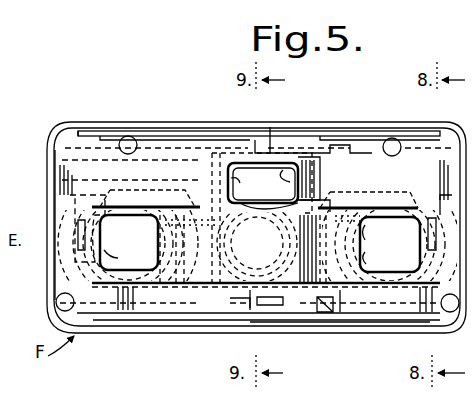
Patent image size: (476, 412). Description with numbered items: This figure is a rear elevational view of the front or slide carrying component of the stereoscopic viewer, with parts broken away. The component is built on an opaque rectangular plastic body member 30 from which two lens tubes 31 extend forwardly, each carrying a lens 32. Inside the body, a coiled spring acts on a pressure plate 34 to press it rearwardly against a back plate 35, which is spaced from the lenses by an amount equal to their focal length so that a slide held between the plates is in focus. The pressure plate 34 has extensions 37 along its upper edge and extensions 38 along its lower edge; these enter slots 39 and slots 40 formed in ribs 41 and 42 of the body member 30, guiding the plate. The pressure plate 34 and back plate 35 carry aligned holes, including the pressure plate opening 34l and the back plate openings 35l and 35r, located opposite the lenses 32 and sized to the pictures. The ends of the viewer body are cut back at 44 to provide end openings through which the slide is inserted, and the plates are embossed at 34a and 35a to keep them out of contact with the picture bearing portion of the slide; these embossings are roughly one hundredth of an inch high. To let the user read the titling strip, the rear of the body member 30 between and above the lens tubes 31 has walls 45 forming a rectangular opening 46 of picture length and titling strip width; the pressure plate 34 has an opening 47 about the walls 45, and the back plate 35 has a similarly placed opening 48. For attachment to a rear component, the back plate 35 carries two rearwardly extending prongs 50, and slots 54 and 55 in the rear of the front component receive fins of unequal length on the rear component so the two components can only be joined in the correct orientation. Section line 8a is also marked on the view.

The plastic body member 30 is at (78, 120).
The lens tube 31 is at (138, 320).
The lens 32 is at (259, 243).
The pressure plate 34 is at (255, 184).
The embossing of pressure plate 34a is at (257, 223).
The opening of pressure plate 34l is at (365, 240).
The back plate 35 is at (250, 232).
The embossing of back plate 35a is at (402, 340).
The opening of back plate 35l is at (370, 258).
The opening of back plate 35r is at (150, 256).
The upper extension of pressure plate 37 is at (180, 136).
The lower extension of pressure plate 38 is at (215, 323).
The upper slot 39 is at (150, 132).
The lower slot 40 is at (178, 323).
The upper rib 41 is at (98, 136).
The lower rib 42 is at (100, 325).
The cut back end 44 is at (58, 180).
The wall 45 is at (300, 188).
The rectangular opening 46 is at (278, 140).
The opening of pressure plate 47 is at (305, 183).
The opening of back plate 48 is at (261, 218).
The prong 50 is at (78, 232).
The slot 54 is at (170, 136).
The slot 55 is at (350, 323).
The section line 8a is at (143, 262).